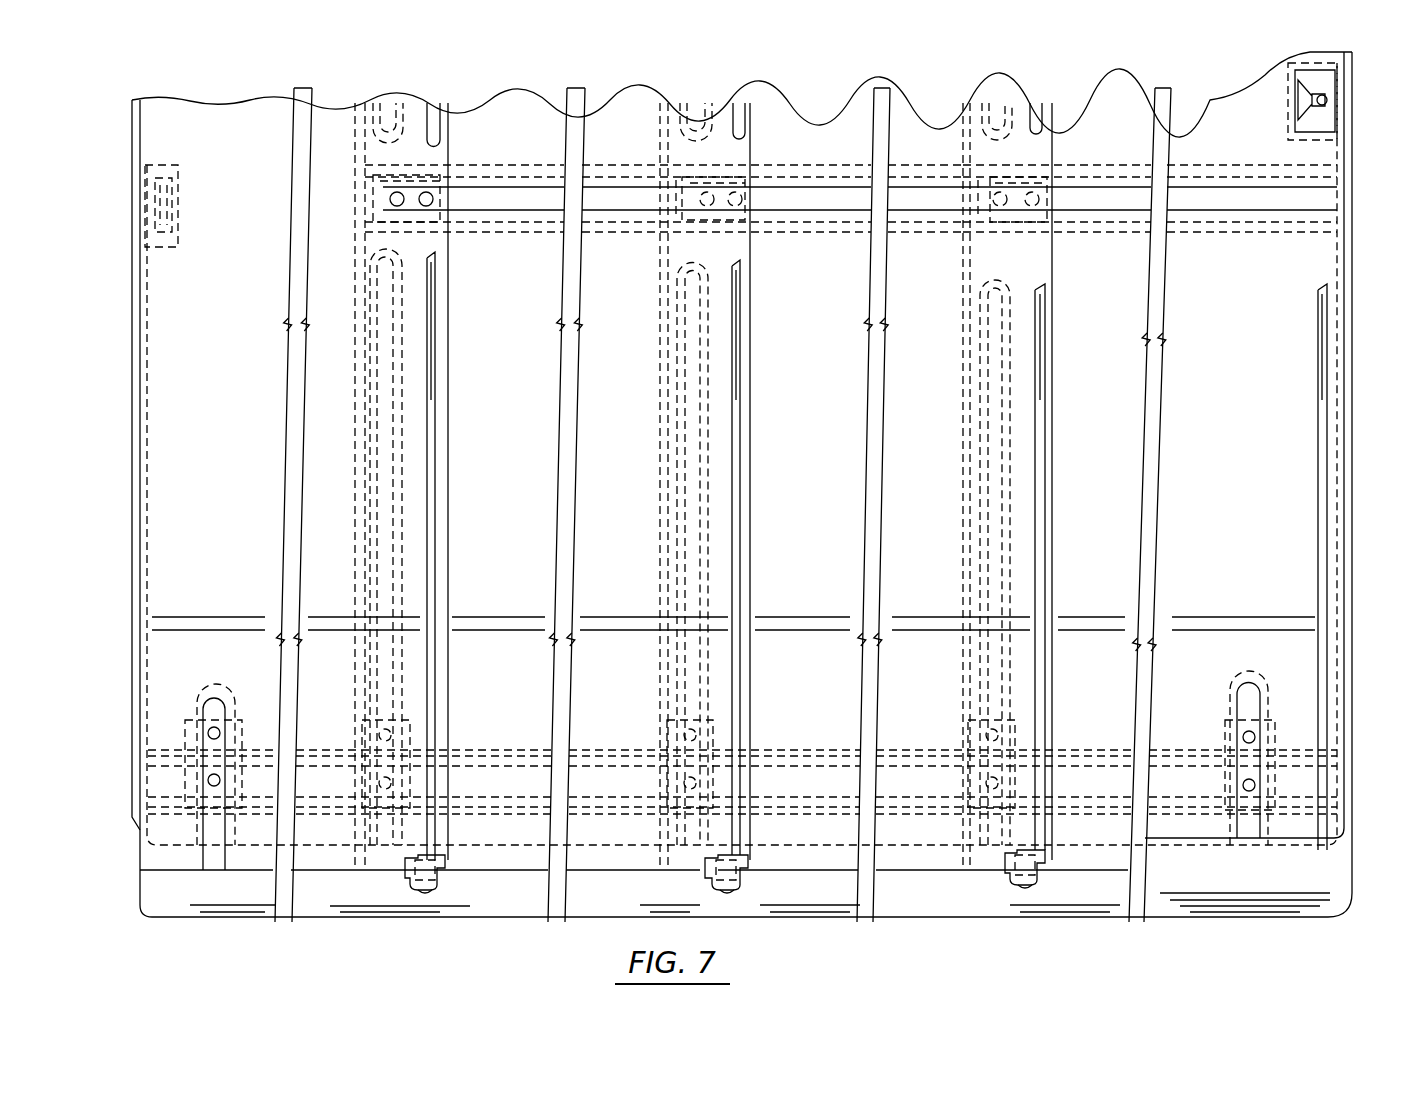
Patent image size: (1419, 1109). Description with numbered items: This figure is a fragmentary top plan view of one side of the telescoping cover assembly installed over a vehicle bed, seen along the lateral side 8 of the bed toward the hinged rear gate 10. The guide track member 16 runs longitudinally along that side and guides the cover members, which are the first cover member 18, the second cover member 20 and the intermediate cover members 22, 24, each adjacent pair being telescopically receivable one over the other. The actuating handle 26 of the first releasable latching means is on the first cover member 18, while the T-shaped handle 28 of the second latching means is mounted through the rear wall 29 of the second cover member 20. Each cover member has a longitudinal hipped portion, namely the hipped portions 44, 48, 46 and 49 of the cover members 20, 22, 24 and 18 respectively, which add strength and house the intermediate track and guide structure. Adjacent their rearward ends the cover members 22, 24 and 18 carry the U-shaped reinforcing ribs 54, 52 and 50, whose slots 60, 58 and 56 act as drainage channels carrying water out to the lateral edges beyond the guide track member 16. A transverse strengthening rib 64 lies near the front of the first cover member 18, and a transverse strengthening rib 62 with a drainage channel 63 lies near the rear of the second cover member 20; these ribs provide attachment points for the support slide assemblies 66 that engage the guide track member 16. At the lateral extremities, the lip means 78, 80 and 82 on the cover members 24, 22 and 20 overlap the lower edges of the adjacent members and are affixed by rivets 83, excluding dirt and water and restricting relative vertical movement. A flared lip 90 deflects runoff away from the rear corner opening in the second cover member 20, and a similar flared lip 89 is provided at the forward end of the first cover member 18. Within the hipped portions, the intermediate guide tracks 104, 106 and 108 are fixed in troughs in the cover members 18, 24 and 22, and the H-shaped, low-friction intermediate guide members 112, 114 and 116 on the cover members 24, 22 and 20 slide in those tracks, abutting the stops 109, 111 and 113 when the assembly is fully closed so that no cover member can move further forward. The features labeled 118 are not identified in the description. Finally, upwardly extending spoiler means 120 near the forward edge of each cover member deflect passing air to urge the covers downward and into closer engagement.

The lateral side 8 is at (318, 905).
The rear gate 10 is at (140, 884).
The guide track member 16 is at (568, 750).
The first cover member 18 is at (1125, 100).
The second cover member 20 is at (258, 100).
The intermediate cover member 22 is at (533, 100).
The intermediate cover member 24 is at (846, 100).
The actuating handle 26 is at (1310, 100).
The T-shaped handle 28 is at (158, 217).
The rear wall 29 is at (125, 355).
The hipped portion 44 is at (215, 125).
The hipped portion 46 is at (798, 120).
The hipped portion 48 is at (505, 110).
The hipped portion 49 is at (1085, 125).
The reinforcing rib 50 is at (1010, 445).
The reinforcing rib 52 is at (740, 470).
The reinforcing rib 54 is at (430, 486).
The drainage channel 56 is at (1010, 445).
The drainage channel 58 is at (740, 470).
The drainage channel 60 is at (430, 486).
The transverse strengthening rib 62 is at (238, 700).
The drainage channel 63 is at (212, 710).
The transverse strengthening rib 64 is at (1232, 690).
The support slide assembly 66 is at (363, 730).
The lip means 78 is at (1038, 858).
The lip means 80 is at (745, 858).
The lip means 82 is at (445, 870).
The rivets 83 is at (428, 888).
The flared lip 89 is at (1356, 805).
The flared lip 90 is at (135, 776).
The intermediate guide track 104 is at (1222, 215).
The intermediate guide track 106 is at (788, 215).
The intermediate guide track 108 is at (450, 215).
The stop 109 is at (985, 200).
The stop 111 is at (685, 200).
The intermediate guide member 112 is at (1045, 180).
The stop 113 is at (375, 200).
The intermediate guide member 114 is at (745, 183).
The intermediate guide member 116 is at (442, 180).
The hole 118 is at (432, 202).
The spoiler means 120 is at (432, 437).